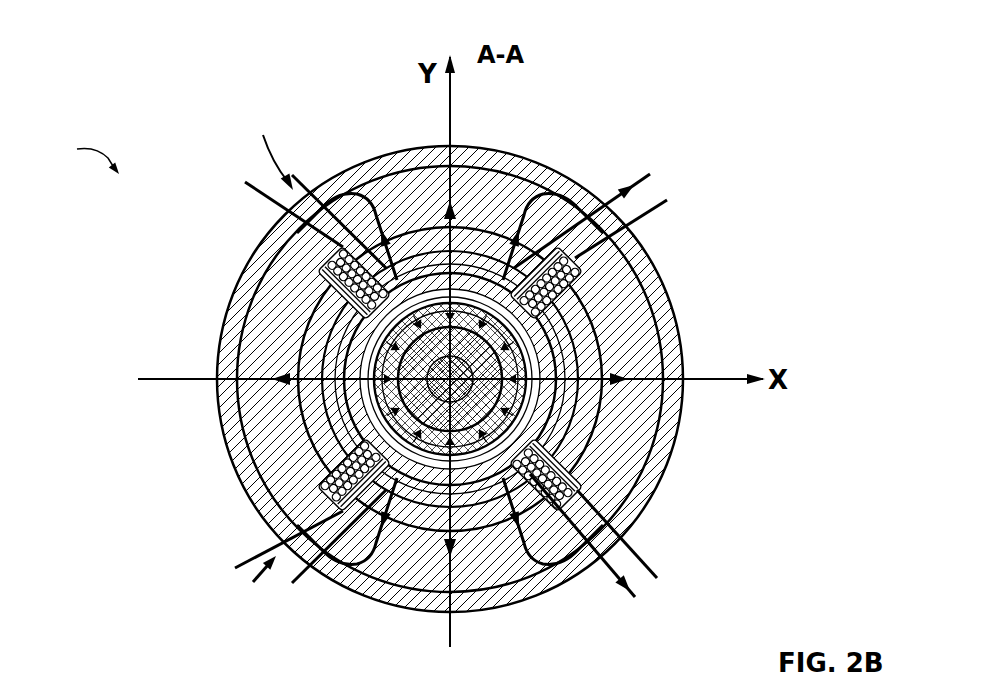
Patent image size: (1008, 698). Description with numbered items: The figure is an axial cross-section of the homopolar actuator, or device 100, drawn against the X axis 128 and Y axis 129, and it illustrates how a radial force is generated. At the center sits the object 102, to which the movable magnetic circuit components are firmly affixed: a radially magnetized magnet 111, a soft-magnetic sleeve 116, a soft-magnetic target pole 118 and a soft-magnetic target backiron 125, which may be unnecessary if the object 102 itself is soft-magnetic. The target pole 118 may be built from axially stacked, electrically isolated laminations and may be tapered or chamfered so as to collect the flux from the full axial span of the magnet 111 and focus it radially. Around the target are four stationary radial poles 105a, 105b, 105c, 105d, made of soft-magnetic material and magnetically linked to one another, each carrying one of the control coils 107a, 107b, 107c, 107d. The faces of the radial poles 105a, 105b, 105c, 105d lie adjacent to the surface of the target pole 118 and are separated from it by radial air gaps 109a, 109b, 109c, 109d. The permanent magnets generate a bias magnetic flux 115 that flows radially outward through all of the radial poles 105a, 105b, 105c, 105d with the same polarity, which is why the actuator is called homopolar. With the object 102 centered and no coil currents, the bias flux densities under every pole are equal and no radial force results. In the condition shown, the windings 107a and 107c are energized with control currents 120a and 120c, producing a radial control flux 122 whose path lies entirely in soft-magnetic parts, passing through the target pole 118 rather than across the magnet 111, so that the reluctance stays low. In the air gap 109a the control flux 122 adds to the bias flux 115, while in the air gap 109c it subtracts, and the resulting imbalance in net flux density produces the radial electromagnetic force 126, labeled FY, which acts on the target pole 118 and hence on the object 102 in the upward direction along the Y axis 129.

The device 100 is at (75, 155).
The object 102 is at (320, 453).
The radial pole 105a is at (387, 168).
The radial pole 105b is at (642, 315).
The radial pole 105c is at (497, 573).
The radial pole 105d is at (278, 288).
The control coil 107a is at (456, 245).
The control coil 107b is at (585, 302).
The control coil 107c is at (420, 505).
The control coil 107d is at (327, 473).
The radial air gap 109a is at (494, 255).
The radial air gap 109b is at (583, 412).
The radial air gap 109c is at (372, 588).
The radial air gap 109d is at (363, 343).
The radially magnetized magnet 111 is at (362, 232).
The bias magnetic flux 115 is at (432, 188).
The soft-magnetic sleeve 116 is at (377, 374).
The target pole 118 is at (358, 412).
The control current 120a is at (266, 147).
The control current 120c is at (280, 550).
The radial control flux 122 is at (290, 250).
The soft-magnetic target backiron 125 is at (607, 448).
The radial electromagnetic force 126 is at (553, 342).
The X axis 128 is at (708, 378).
The Y axis 129 is at (453, 118).